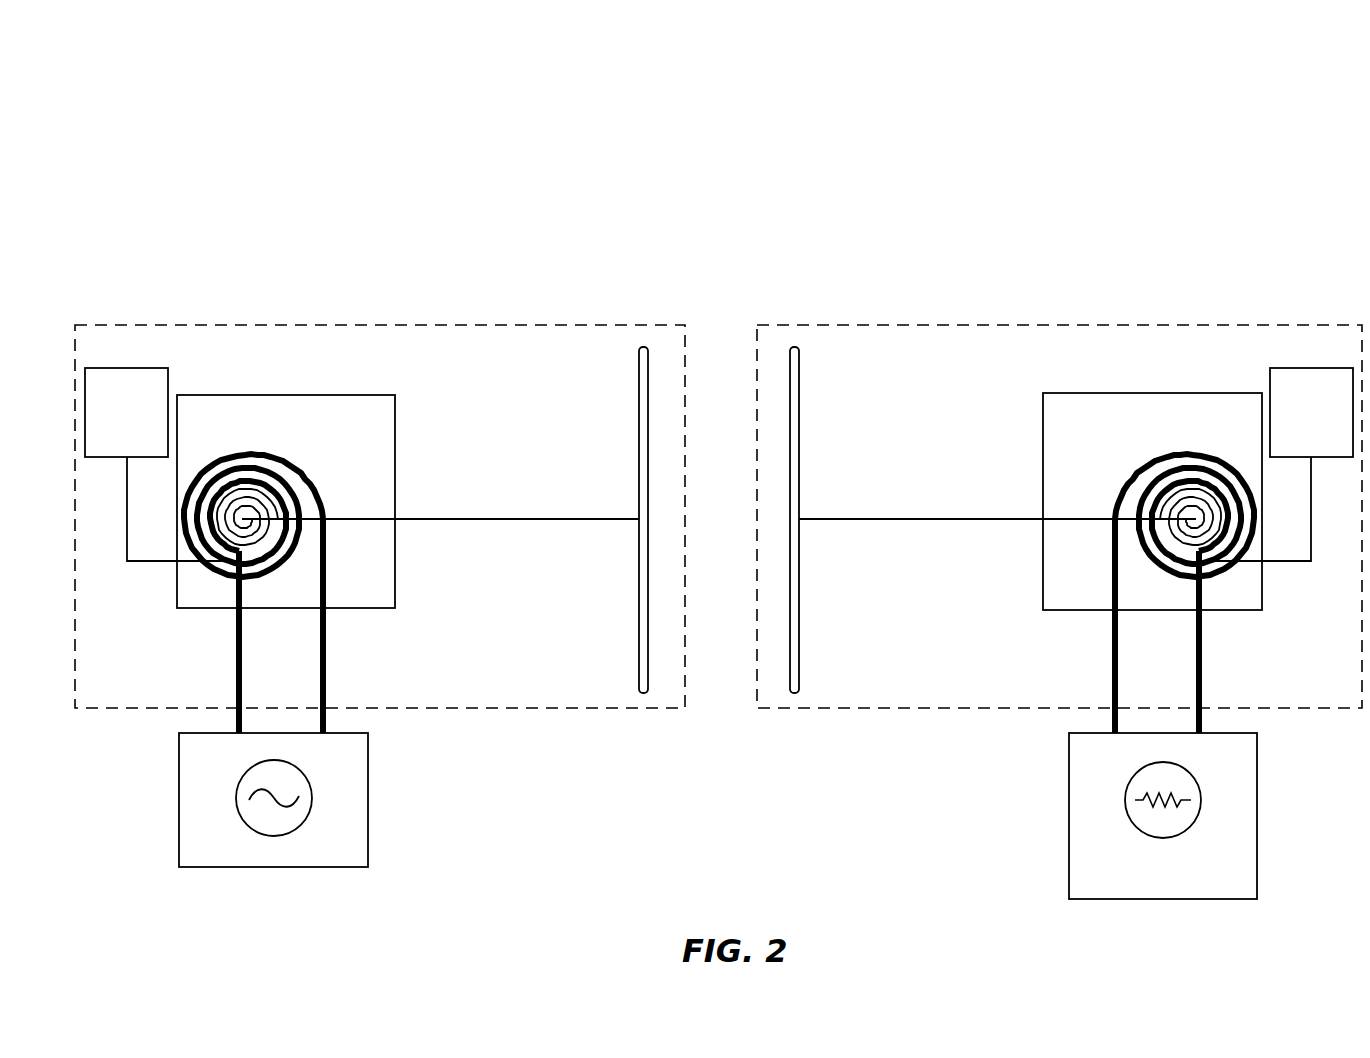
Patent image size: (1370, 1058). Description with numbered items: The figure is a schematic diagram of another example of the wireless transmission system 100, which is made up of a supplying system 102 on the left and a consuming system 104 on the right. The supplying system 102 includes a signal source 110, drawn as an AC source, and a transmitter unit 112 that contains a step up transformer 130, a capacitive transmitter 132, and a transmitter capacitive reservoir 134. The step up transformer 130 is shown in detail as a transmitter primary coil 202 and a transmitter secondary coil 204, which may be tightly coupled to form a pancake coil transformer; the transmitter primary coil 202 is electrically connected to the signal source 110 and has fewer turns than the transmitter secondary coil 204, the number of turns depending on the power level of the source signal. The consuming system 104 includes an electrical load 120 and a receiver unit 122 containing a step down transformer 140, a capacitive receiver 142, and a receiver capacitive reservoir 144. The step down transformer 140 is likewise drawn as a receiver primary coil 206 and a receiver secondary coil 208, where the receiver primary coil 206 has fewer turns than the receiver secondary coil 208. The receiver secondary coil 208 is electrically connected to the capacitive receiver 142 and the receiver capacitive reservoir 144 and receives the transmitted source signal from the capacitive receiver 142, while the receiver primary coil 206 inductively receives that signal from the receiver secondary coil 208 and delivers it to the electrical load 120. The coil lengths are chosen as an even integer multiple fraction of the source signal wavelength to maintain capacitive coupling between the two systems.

The wireless transmission system 100 is at (258, 115).
The supplying system 102 is at (545, 250).
The consuming system 104 is at (802, 250).
The signal source 110 is at (369, 798).
The transmitter unit 112 is at (412, 362).
The electrical load 120 is at (1069, 798).
The receiver unit 122 is at (1062, 364).
The step up transformer 130 is at (364, 436).
The capacitive transmitter 132 is at (638, 432).
The transmitter capacitive reservoir 134 is at (128, 368).
The step down transformer 140 is at (1105, 436).
The capacitive receiver 142 is at (800, 435).
The receiver capacitive reservoir 144 is at (1310, 368).
The transmitter primary coil 202 is at (242, 455).
The transmitter secondary coil 204 is at (282, 505).
The receiver primary coil 206 is at (1193, 455).
The receiver secondary coil 208 is at (1156, 500).